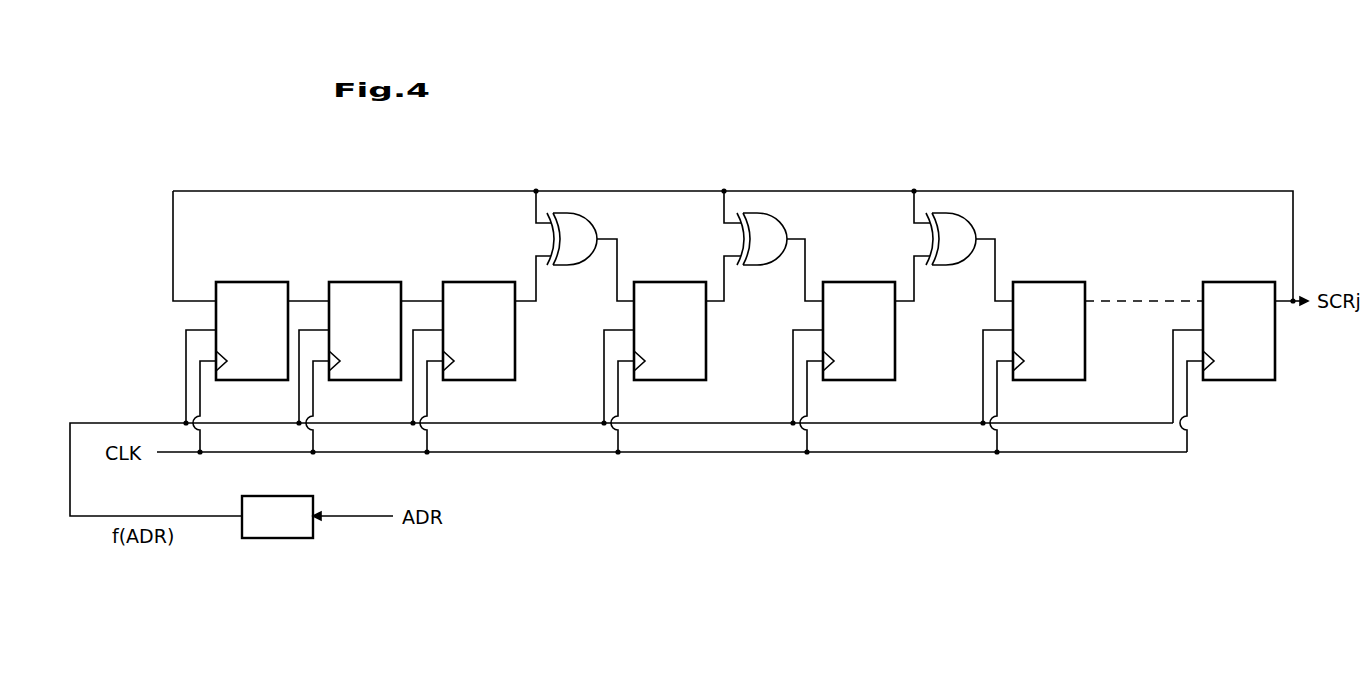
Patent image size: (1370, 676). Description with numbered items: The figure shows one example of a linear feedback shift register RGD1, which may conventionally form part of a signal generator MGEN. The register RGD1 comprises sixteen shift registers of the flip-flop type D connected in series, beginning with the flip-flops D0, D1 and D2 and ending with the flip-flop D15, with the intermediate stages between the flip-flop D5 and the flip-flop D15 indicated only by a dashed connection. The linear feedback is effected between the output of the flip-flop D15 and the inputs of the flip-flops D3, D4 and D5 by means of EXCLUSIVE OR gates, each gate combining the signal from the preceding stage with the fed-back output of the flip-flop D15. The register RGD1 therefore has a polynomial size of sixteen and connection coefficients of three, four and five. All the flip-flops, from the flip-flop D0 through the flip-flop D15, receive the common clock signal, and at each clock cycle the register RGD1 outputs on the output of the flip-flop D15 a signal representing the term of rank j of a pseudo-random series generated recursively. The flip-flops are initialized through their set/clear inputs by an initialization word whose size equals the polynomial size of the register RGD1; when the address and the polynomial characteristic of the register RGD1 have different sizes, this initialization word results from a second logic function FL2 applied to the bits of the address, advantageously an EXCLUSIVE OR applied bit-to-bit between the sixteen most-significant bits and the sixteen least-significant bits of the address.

The flip-flop D0 is at (252, 281).
The flip-flop D1 is at (365, 281).
The flip-flop D2 is at (479, 281).
The flip-flop D3 is at (670, 281).
The flip-flop D4 is at (859, 281).
The flip-flop D5 is at (1049, 281).
The flip-flop D15 is at (1239, 281).
The linear feedback shift register RGD1 is at (762, 150).
The signal generator MGEN is at (978, 78).
The second logic function FL2 is at (277, 517).